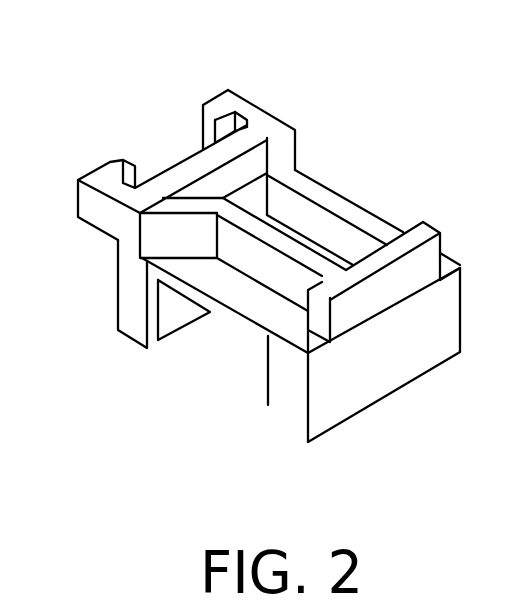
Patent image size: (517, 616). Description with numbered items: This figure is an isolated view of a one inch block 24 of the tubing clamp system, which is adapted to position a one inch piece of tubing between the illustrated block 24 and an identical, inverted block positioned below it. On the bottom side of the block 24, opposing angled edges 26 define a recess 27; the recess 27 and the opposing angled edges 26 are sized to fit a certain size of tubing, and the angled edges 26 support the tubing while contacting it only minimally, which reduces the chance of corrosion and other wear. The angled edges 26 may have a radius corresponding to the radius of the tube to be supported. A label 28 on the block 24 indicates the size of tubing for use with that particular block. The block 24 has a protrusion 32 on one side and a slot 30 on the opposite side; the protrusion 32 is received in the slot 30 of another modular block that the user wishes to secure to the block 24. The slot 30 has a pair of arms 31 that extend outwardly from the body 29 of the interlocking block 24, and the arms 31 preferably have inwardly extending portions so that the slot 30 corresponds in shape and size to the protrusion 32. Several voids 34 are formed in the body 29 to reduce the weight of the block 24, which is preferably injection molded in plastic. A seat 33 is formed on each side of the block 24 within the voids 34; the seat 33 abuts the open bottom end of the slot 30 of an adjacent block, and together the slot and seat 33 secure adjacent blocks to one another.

The block 24 is at (270, 100).
The opposing angled edges 26 is at (165, 333).
The recess 27 is at (237, 322).
The label 28 is at (350, 400).
The body 29 is at (335, 225).
The slot 30 is at (183, 155).
The pair of arms 31 is at (114, 168).
The protrusion 32 is at (410, 223).
The seat 33 is at (262, 323).
The voids 34 is at (247, 170).